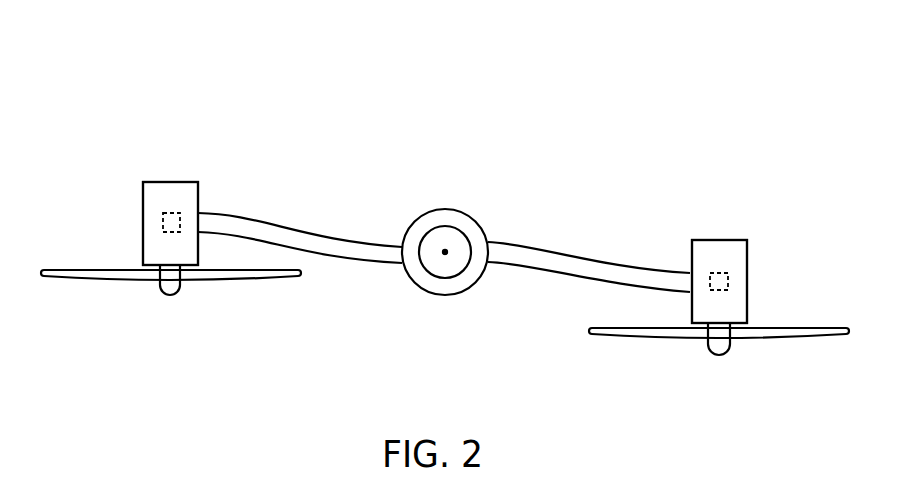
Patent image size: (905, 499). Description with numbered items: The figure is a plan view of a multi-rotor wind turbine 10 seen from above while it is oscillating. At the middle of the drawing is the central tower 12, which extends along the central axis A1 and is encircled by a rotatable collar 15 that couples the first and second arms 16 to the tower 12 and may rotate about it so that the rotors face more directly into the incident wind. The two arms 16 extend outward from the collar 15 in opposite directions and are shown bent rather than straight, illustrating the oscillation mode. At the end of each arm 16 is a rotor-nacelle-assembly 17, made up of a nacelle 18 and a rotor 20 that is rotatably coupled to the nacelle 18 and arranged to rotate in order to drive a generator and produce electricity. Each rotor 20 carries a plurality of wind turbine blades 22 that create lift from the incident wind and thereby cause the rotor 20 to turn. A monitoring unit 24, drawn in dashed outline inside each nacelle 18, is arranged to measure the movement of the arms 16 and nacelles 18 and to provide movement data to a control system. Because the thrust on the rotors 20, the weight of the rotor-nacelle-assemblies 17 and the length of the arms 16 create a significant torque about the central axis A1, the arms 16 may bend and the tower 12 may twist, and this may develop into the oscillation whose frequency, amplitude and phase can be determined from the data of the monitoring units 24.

The multi-rotor wind turbine 10 is at (558, 82).
The central tower 12 is at (453, 228).
The rotatable collar 15 is at (458, 295).
The arms 16 is at (252, 215).
The rotor-nacelle-assembly 17 is at (191, 162).
The nacelle 18 is at (165, 182).
The rotor 20 is at (49, 292).
The wind turbine blades 22 is at (203, 283).
The monitoring unit 24 is at (163, 223).
The central axis A1 is at (442, 257).